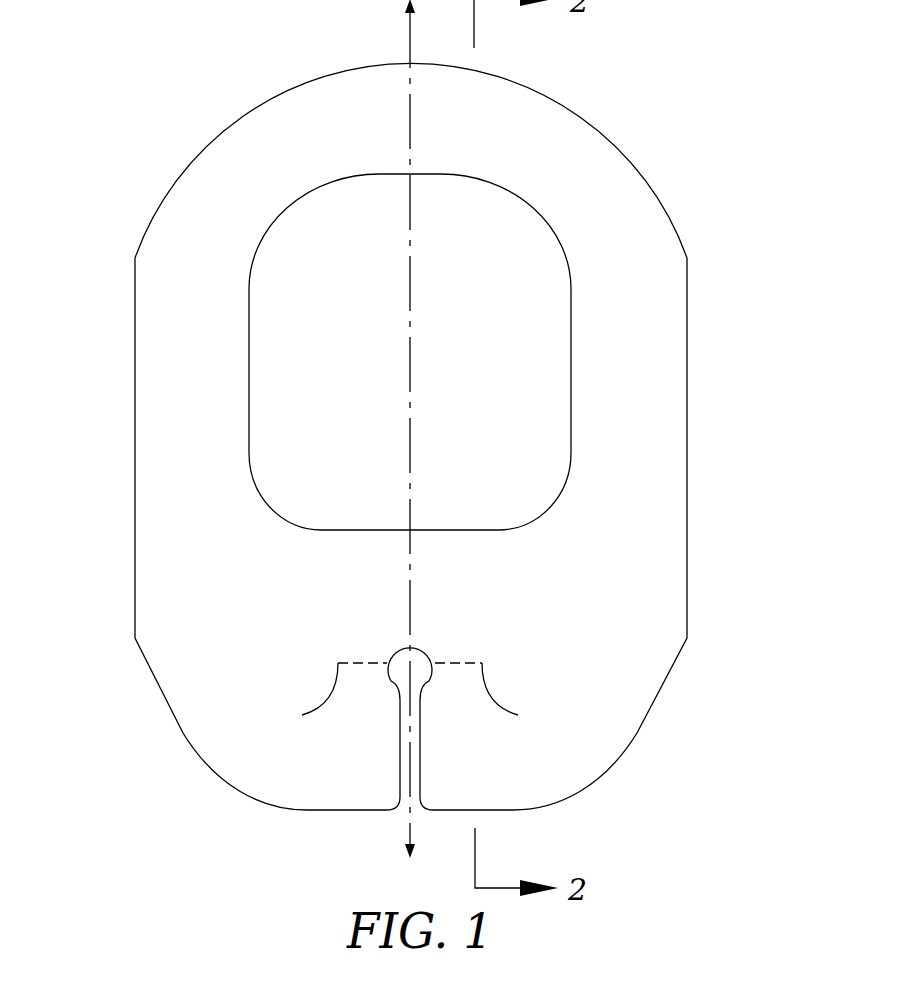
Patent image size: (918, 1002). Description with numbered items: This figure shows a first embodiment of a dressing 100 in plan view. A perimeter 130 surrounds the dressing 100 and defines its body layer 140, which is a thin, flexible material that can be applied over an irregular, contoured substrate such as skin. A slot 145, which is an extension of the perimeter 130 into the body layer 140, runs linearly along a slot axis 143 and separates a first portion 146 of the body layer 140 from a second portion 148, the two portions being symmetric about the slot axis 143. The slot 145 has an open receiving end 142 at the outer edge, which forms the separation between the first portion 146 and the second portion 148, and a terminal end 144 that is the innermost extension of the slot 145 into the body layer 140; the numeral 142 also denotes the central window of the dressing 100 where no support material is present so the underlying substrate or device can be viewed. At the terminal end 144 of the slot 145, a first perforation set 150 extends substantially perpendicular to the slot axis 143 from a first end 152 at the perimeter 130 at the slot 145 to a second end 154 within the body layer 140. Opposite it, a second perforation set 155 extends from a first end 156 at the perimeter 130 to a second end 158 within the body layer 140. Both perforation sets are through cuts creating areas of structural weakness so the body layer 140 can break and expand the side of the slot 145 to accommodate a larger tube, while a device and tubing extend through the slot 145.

The dressing 100 is at (677, 80).
The perimeter 130 is at (135, 455).
The body layer 140 is at (620, 538).
The receiving end 142 is at (320, 257).
The slot axis 143 is at (405, 17).
The terminal end 144 is at (392, 650).
The slot 145 is at (398, 740).
The first portion 146 is at (359, 793).
The second portion 148 is at (509, 792).
The first perforation set 150 is at (457, 662).
The first end 152 is at (436, 660).
The second end 154 is at (525, 698).
The second perforation set 155 is at (360, 662).
The first end 156 is at (387, 655).
The second end 158 is at (297, 698).